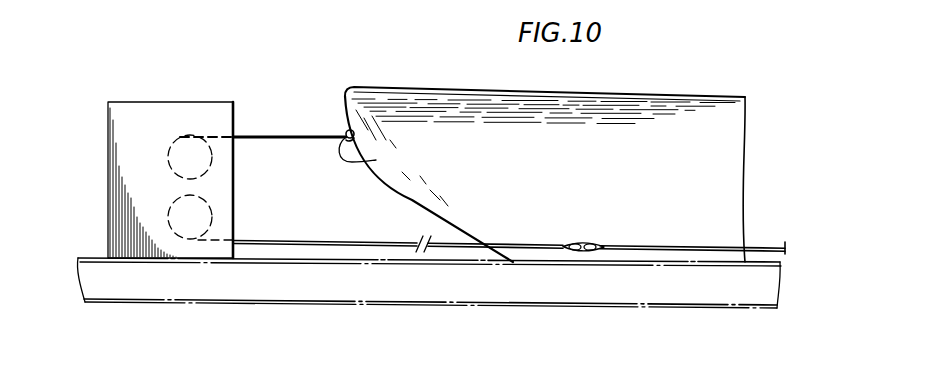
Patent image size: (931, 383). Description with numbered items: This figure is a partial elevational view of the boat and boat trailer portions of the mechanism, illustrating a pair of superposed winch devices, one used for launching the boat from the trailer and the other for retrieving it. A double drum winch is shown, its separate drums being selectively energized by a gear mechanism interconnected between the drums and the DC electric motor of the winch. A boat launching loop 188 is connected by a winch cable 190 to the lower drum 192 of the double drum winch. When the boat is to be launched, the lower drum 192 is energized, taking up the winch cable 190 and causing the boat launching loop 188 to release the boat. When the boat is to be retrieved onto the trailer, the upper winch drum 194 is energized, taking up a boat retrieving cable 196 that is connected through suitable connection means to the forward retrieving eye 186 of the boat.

The forward retrieving eye 186 is at (376, 160).
The boat launching loop 188 is at (670, 250).
The winch cable 190 is at (372, 246).
The lower drum 192 is at (205, 219).
The upper winch drum 194 is at (188, 152).
The boat retrieving cable 196 is at (296, 135).